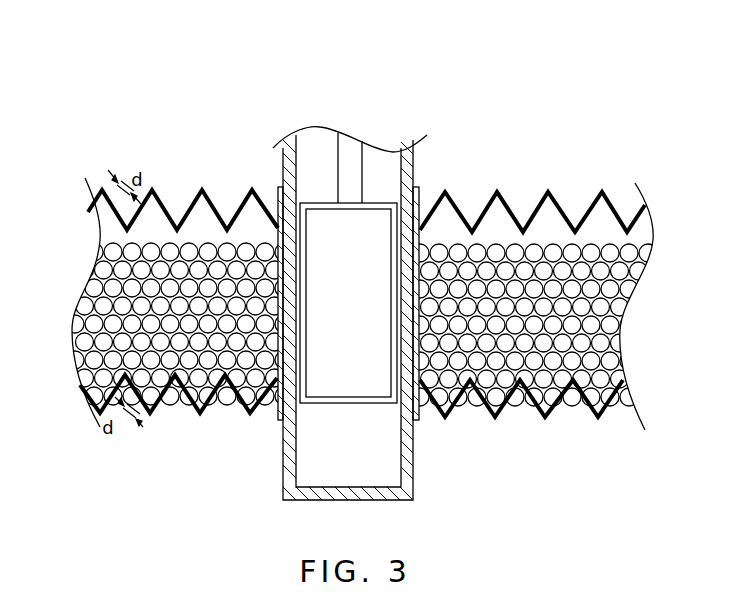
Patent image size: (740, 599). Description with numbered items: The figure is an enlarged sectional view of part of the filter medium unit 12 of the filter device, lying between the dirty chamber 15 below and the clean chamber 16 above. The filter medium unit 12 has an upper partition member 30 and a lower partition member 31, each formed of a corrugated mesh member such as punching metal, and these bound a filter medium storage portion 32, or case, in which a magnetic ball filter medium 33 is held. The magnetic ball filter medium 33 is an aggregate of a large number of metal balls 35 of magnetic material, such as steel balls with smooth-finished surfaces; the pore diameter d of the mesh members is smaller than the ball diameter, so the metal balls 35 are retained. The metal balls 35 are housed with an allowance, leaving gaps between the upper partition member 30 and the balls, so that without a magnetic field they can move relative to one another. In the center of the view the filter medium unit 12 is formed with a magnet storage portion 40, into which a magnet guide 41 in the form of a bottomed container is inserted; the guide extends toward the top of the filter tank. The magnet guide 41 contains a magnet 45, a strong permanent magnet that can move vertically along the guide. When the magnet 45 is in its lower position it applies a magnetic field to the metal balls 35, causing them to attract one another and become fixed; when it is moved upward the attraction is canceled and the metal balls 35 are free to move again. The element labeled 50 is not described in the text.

The filter medium unit 12 is at (266, 76).
The dirty chamber 15 is at (143, 494).
The clean chamber 16 is at (188, 124).
The partition member 30 is at (212, 205).
The partition member 31 is at (208, 402).
The filter medium storage portion 32 is at (113, 231).
The magnetic ball filter medium 33 is at (555, 236).
The metal balls 35 is at (88, 342).
The magnet storage portion 40 is at (423, 431).
The magnet guide 41 is at (427, 157).
The magnet 45 is at (350, 383).
The holder 50 is at (350, 145).